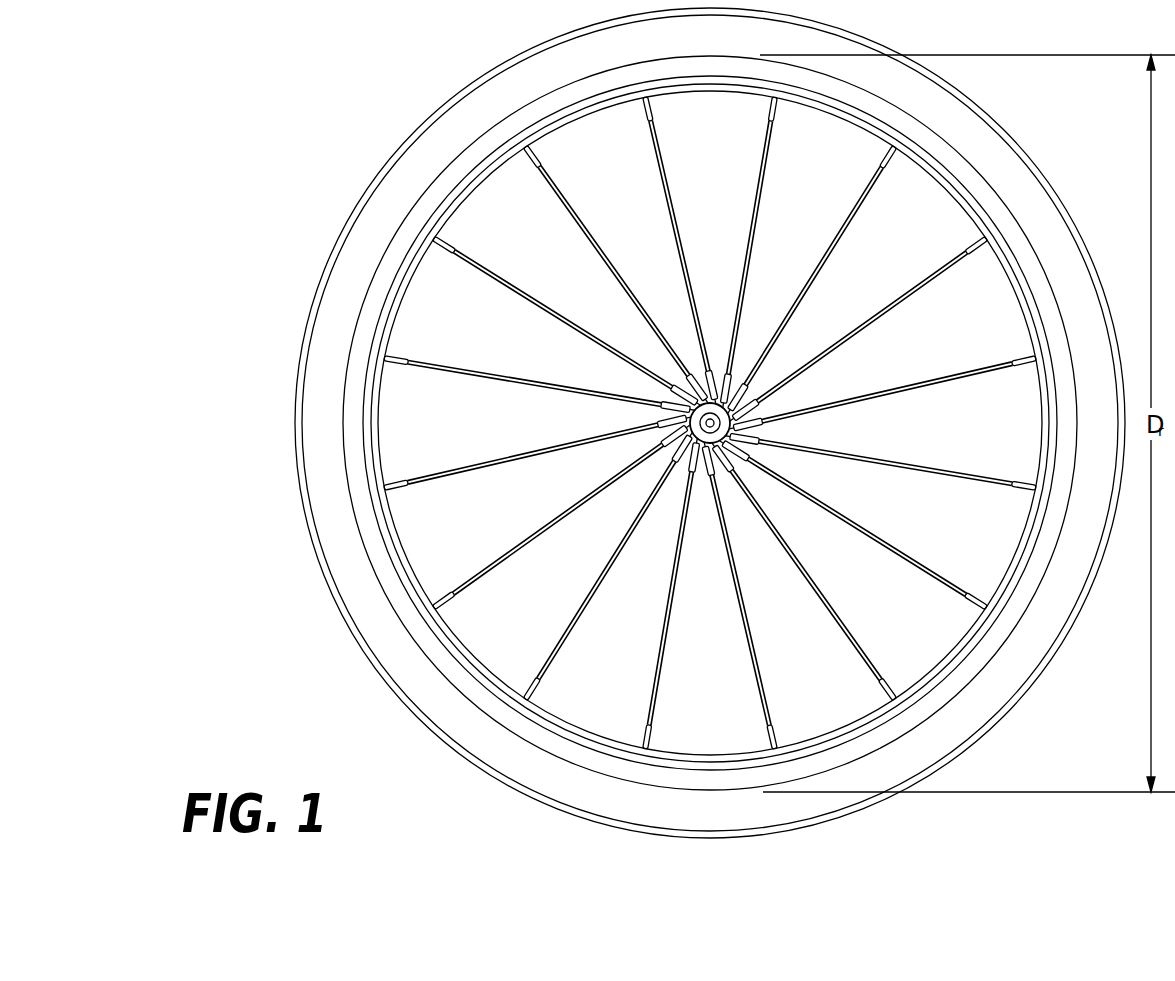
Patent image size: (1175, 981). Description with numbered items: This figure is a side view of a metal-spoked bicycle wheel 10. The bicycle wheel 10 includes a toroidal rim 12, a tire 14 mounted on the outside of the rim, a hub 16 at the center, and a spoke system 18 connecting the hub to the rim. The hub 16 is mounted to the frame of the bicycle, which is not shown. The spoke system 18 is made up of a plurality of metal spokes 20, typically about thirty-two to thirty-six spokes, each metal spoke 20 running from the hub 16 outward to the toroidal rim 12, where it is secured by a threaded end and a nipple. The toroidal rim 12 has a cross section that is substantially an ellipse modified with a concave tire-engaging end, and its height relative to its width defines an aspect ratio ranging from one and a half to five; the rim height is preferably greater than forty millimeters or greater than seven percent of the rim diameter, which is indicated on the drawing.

The bicycle wheel 10 is at (656, 423).
The toroidal rim 12 is at (483, 145).
The tire 14 is at (326, 362).
The hub 16 is at (695, 419).
The spoke system 18 is at (657, 423).
The metal spoke 20 is at (601, 566).